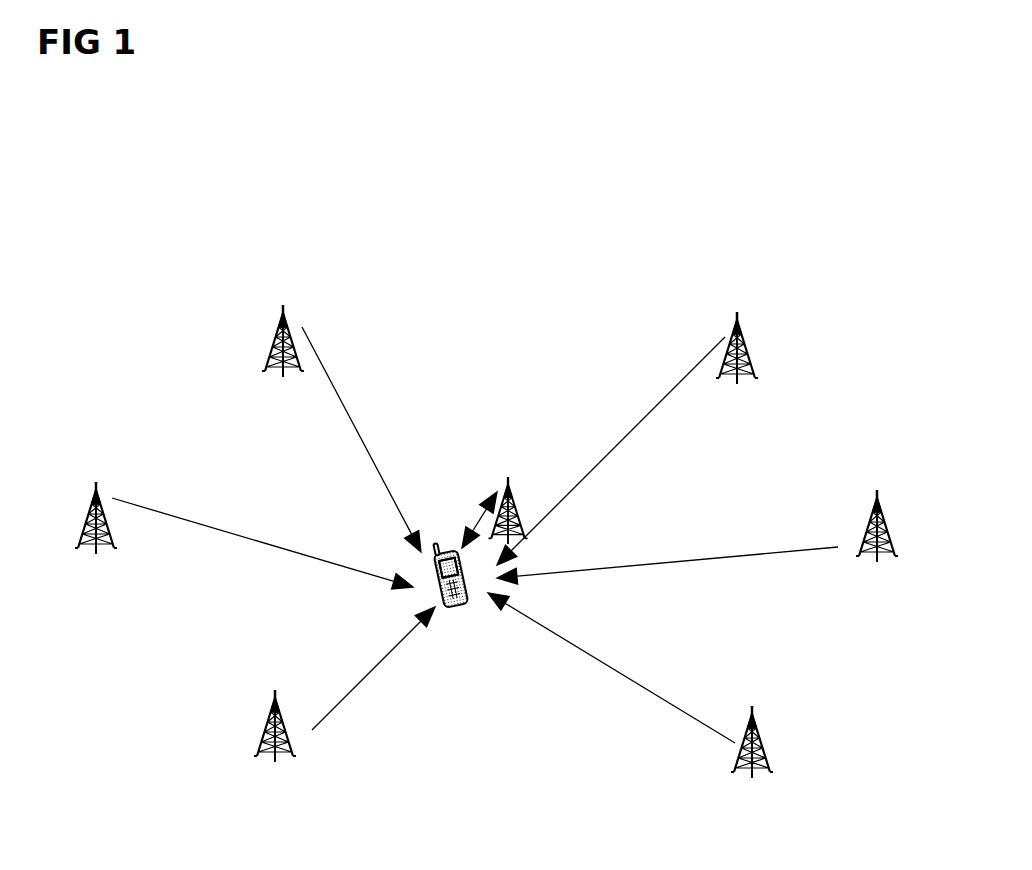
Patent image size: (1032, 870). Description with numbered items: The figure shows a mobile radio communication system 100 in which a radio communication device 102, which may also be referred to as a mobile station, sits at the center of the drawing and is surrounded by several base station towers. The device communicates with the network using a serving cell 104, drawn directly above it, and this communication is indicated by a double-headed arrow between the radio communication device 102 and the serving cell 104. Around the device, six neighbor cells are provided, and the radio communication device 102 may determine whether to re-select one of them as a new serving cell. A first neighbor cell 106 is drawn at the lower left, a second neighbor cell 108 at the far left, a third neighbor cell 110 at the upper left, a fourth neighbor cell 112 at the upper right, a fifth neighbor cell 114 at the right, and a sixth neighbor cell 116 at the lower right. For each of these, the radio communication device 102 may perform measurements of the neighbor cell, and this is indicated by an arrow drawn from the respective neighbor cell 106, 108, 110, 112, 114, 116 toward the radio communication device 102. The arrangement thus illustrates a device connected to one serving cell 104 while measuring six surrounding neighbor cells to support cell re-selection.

The communication system 100 is at (813, 168).
The radio communication device 102 is at (470, 600).
The serving cell 104 is at (503, 452).
The first neighbor cell 106 is at (258, 757).
The second neighbor cell 108 is at (105, 432).
The third neighbor cell 110 is at (334, 262).
The fourth neighbor cell 112 is at (820, 268).
The fifth neighbor cell 114 is at (862, 555).
The sixth neighbor cell 116 is at (740, 765).